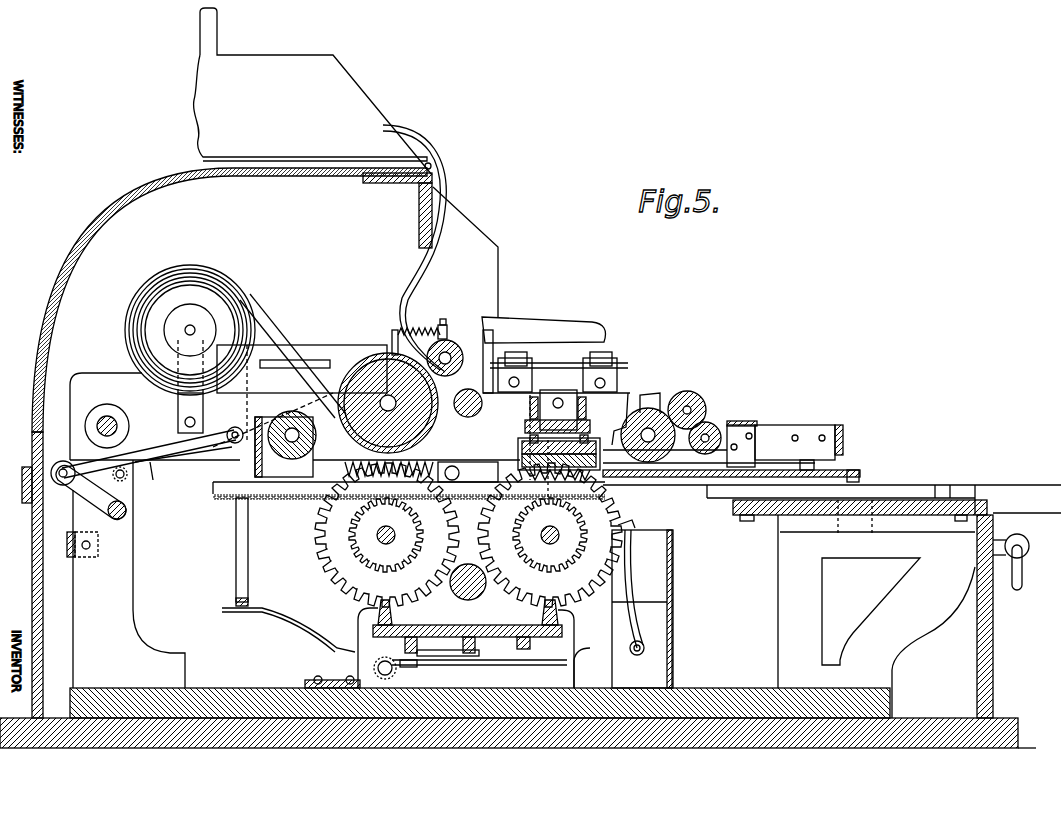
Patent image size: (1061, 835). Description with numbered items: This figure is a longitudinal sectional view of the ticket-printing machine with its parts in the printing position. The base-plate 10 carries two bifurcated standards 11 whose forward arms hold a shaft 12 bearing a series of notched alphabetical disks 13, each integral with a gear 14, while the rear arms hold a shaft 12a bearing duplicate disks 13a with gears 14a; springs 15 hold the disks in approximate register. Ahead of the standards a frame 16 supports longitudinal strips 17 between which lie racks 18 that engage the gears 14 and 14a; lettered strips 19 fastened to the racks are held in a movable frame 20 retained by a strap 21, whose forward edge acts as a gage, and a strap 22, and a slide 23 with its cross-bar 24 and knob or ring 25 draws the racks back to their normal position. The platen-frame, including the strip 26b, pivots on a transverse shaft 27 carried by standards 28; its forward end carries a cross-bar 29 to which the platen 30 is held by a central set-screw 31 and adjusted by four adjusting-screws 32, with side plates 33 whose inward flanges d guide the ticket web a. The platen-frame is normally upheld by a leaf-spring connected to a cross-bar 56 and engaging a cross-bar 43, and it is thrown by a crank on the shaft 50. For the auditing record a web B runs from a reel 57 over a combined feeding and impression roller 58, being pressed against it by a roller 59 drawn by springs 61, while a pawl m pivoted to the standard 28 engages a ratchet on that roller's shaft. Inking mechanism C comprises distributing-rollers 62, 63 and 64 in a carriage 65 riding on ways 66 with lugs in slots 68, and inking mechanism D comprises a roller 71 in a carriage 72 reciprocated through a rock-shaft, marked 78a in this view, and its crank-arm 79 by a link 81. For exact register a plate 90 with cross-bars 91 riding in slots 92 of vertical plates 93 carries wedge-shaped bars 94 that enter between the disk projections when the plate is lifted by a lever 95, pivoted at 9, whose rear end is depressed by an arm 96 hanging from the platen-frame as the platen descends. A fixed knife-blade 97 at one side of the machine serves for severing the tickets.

The pivot 9 is at (400, 670).
The base-plate 10 is at (741, 601).
The bifurcated standards 11 is at (466, 644).
The shaft 12 is at (550, 535).
The shaft 12a is at (386, 535).
The alphabetical disks 13 is at (550, 535).
The alphabetical disks 13a is at (387, 535).
The gear 14 is at (620, 526).
The gear 14a is at (392, 540).
The springs 15 is at (664, 550).
The frame 16 is at (877, 625).
The longitudinal horizontal strips 17 is at (733, 512).
The racks 18 is at (655, 494).
The strips 19 is at (884, 508).
The movable frame 20 is at (1027, 489).
The strap 21 is at (862, 480).
The strap 22 is at (598, 495).
The slide 23 is at (1000, 532).
The cross-bar 24 is at (628, 495).
The knob or ring 25 is at (1028, 560).
The platen-frame strip 26b is at (155, 416).
The transverse shaft 27 is at (115, 422).
The standards 28 is at (129, 589).
The cross-bar 29 is at (527, 420).
The platen 30 is at (518, 442).
The central set-screw 31 is at (558, 402).
The adjusting-screws 32 is at (557, 382).
The plates 33 is at (520, 456).
The cross-bar 43 is at (462, 411).
The shaft 50 is at (468, 589).
The cross-bar 56 is at (72, 544).
The reel 57 is at (190, 330).
The combined feeding and impression roller 58 is at (386, 352).
The roller 59 is at (450, 342).
The springs 61 is at (430, 332).
The distributing-roller 62 is at (647, 427).
The distributing-roller 63 is at (687, 402).
The distributing-roller 64 is at (710, 427).
The carriage 65 is at (785, 445).
The ways 66 is at (709, 455).
The slots 68 is at (690, 477).
The roller 71 is at (303, 435).
The carriage 72 is at (228, 462).
The pin 78a is at (127, 512).
The crank-arm 79 is at (91, 493).
The link 81 is at (158, 452).
The plate 90 is at (467, 620).
The cross-bars 91 is at (418, 644).
The slots 92 is at (404, 646).
The vertical plates 93 is at (587, 665).
The wedge-shaped strips or bars 94 is at (378, 613).
The lever 95 is at (288, 630).
The frame or arm 96 is at (252, 548).
The fixed knife-blade 97 is at (544, 330).
The web B is at (293, 356).
The inking mechanism C is at (718, 384).
The inking mechanism D is at (284, 447).
The web a is at (518, 472).
The flanges d is at (560, 470).
The pawl m is at (140, 477).